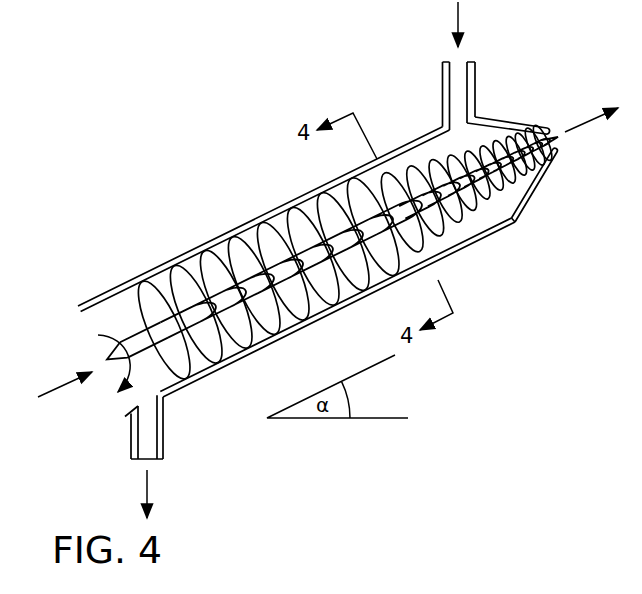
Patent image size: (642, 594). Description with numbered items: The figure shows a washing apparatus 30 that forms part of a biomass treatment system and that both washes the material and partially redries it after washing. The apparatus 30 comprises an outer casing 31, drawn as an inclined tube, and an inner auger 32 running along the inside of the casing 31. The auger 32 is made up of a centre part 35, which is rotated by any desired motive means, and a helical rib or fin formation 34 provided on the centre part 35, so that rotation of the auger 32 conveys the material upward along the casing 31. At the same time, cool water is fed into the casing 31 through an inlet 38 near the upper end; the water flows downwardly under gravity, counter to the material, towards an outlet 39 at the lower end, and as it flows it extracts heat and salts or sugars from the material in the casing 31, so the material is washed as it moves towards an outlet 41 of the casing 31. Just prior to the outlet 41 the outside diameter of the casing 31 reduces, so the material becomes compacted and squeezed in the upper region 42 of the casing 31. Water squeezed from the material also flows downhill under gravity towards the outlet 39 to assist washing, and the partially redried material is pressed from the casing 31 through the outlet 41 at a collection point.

The washing apparatus 30 is at (352, 267).
The outer casing 31 is at (233, 227).
The inner auger 32 is at (460, 251).
The helical rib or fin formation 34 is at (275, 342).
The centre part 35 is at (303, 330).
The inlet 38 is at (475, 102).
The outlet 39 is at (165, 454).
The outlet 41 is at (537, 190).
The upper region 42 is at (517, 223).